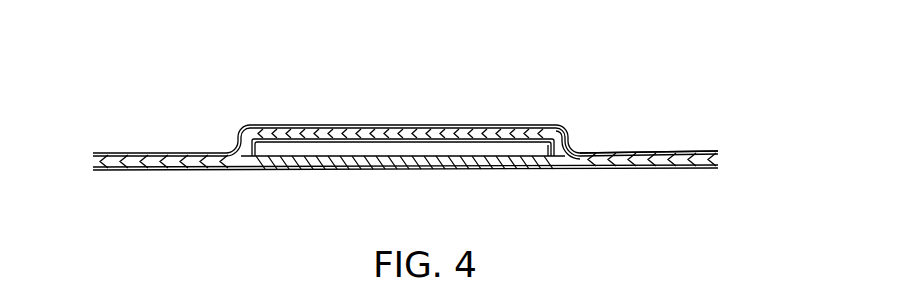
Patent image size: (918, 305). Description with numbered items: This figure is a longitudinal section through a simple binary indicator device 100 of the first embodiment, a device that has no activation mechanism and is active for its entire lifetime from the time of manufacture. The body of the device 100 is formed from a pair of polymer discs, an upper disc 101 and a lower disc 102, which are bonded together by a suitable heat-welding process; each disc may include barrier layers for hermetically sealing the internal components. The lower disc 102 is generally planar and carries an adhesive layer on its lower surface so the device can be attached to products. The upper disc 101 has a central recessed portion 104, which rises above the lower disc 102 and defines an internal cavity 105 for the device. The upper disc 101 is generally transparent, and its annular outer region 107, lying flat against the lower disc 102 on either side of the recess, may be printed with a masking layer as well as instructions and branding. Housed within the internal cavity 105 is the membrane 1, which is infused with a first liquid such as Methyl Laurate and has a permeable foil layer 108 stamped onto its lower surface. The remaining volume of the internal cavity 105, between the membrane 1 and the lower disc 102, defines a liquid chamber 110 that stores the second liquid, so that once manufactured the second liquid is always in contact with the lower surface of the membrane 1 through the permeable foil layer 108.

The binary indicator device 100 is at (684, 47).
The membrane 1 is at (458, 124).
The upper disc 101 is at (718, 151).
The lower disc 102 is at (718, 167).
The central recessed portion 104 is at (575, 134).
The internal cavity 105 is at (329, 157).
The annular outer region 107 is at (676, 150).
The permeable foil layer 108 is at (546, 146).
The liquid chamber 110 is at (430, 151).